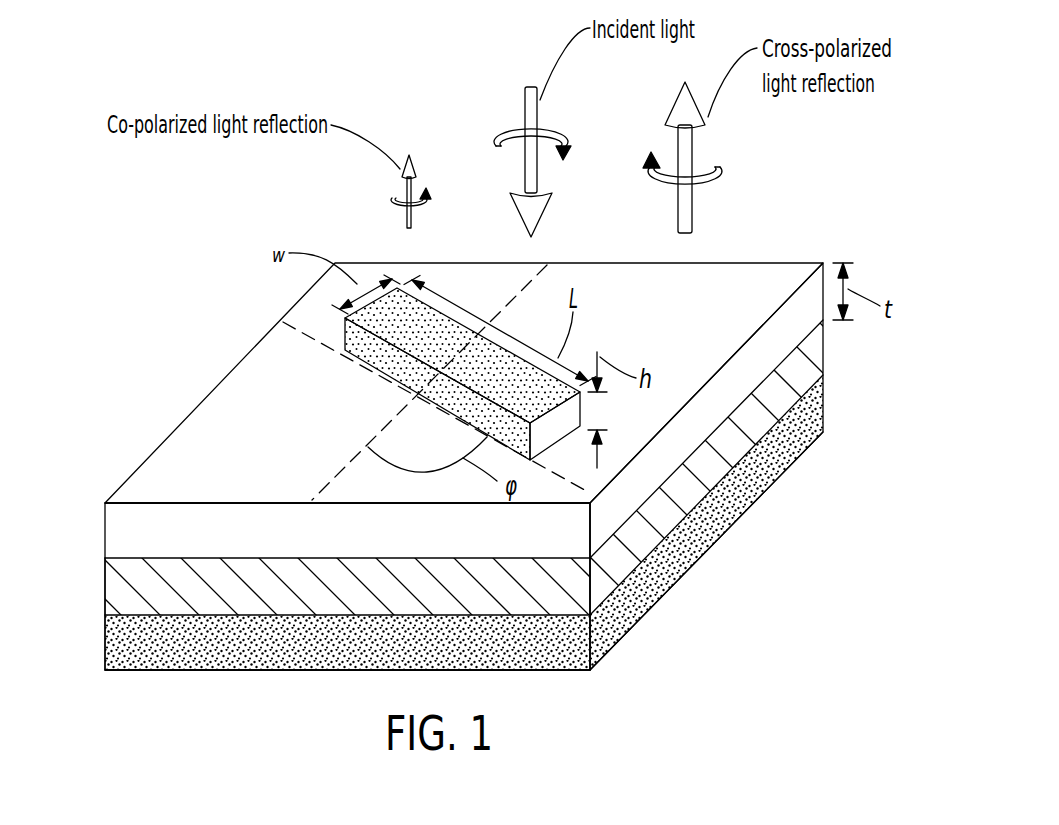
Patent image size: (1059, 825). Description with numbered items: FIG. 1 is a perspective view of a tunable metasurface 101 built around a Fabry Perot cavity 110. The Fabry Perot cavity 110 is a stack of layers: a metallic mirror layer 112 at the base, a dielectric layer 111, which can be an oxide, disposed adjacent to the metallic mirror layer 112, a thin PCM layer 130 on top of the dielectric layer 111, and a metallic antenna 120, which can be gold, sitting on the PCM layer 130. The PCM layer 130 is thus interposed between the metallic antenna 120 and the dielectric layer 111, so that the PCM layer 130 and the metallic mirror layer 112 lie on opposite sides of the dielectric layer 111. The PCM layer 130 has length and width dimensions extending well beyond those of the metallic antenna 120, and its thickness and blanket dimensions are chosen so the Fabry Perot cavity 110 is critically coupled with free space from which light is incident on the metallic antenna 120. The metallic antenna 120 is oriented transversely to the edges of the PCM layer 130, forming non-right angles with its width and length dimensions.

The tunable metasurface 101 is at (125, 427).
The Fabry Perot cavity 110 is at (95, 680).
The dielectric layer 111 is at (678, 500).
The metallic mirror layer 112 is at (640, 590).
The metallic antenna 120 is at (358, 336).
The PCM layer 130 is at (127, 512).